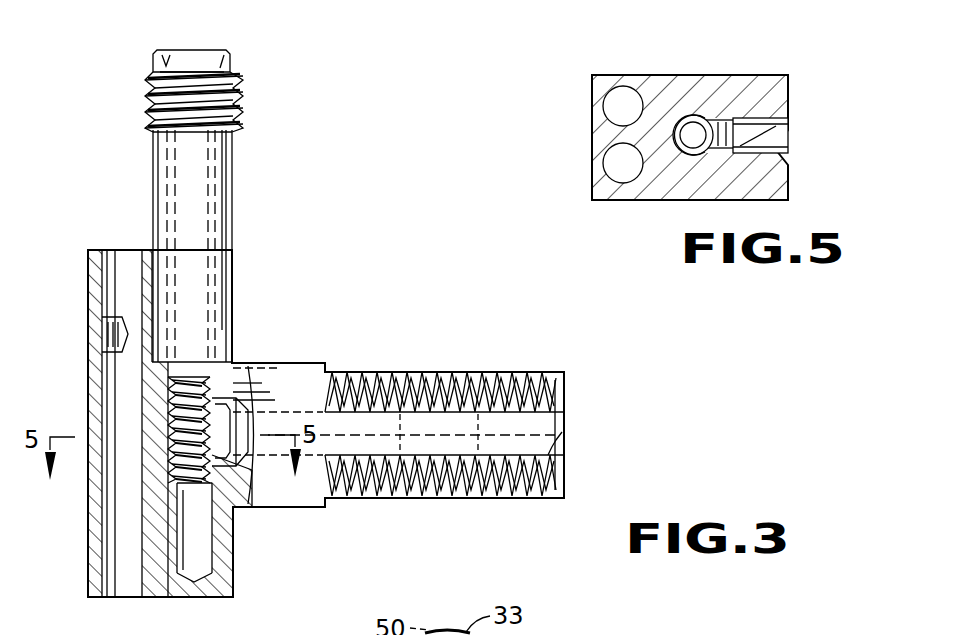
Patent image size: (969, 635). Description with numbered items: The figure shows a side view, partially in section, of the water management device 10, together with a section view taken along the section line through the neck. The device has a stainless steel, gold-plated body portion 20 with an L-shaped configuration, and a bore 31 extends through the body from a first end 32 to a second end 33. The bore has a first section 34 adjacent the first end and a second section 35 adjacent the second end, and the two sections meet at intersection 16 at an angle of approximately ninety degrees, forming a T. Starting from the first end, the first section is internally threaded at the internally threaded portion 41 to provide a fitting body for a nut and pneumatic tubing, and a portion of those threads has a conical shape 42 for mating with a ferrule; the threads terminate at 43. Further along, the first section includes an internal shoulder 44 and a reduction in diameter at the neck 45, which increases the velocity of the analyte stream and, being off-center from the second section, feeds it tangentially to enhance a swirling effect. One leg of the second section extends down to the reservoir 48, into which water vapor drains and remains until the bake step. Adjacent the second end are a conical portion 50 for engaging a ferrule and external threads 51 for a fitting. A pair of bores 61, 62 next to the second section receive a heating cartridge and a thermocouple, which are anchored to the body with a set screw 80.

In FIG. 3, the water management device 10 is at (293, 204).
In FIG. 3, the intersection 16 is at (208, 456).
In FIG. 3, the body portion 20 is at (236, 300).
In FIG. 3, the bore 31 is at (165, 195).
In FIG. 3, the first end 32 is at (568, 436).
In FIG. 3, the second end 33 is at (205, 50).
In FIG. 3, the first section 34 is at (572, 408).
In FIG. 3, the second section 35 is at (195, 170).
In FIG. 5, the second section 35 is at (693, 128).
In FIG. 3, the internally threaded portion 41 is at (560, 452).
In FIG. 3, the conical shape 42 is at (408, 500).
In FIG. 3, the thread termination 43 is at (306, 480).
In FIG. 5, the thread termination 43 is at (790, 140).
In FIG. 3, the internal shoulder 44 is at (238, 404).
In FIG. 5, the internal shoulder 44 is at (760, 118).
In FIG. 3, the neck 45 is at (243, 495).
In FIG. 5, the neck 45 is at (712, 118).
In FIG. 3, the reservoir 48 is at (203, 560).
In FIG. 3, the conical portion 50 is at (178, 46).
In FIG. 3, the external threads 51 is at (245, 86).
In FIG. 5, the bore 61 is at (620, 103).
In FIG. 5, the bore 62 is at (616, 166).
In FIG. 3, the set screw 80 is at (100, 320).